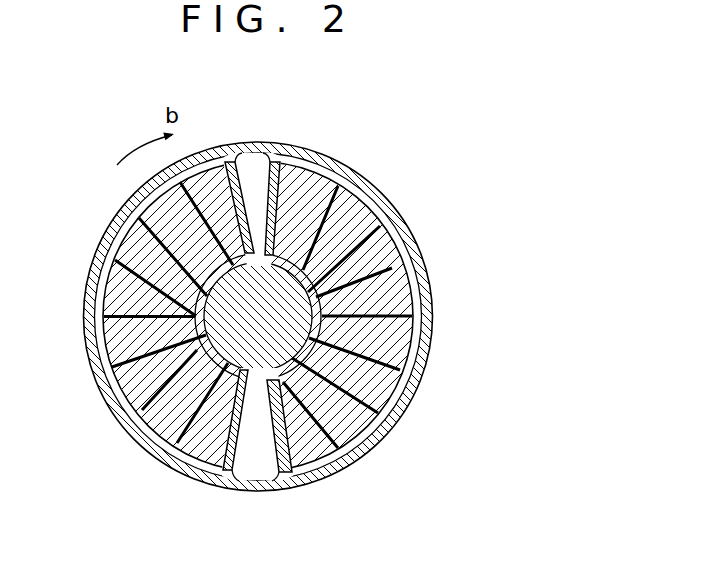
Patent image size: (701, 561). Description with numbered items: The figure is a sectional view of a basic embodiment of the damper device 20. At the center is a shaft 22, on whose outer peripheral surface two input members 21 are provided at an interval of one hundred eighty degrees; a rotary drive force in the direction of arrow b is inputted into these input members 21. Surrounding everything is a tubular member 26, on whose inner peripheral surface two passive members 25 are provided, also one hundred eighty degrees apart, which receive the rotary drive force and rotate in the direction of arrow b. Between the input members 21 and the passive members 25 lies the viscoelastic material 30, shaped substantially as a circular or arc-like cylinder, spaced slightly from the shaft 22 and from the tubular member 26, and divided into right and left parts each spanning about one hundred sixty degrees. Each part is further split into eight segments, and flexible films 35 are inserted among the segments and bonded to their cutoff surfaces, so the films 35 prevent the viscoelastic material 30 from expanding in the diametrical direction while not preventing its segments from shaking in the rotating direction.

The damper device 20 is at (485, 155).
The input member 21 is at (271, 165).
The shaft 22 is at (296, 329).
The passive member 25 is at (241, 163).
The tubular member 26 is at (100, 383).
The viscoelastic material 30 is at (398, 242).
The flexible film 35 is at (333, 188).